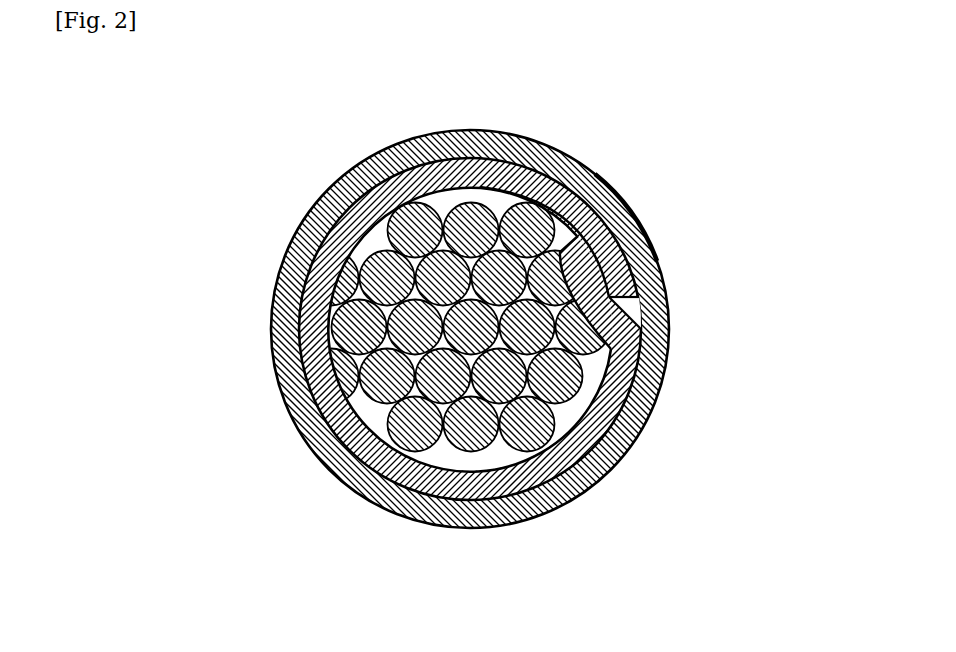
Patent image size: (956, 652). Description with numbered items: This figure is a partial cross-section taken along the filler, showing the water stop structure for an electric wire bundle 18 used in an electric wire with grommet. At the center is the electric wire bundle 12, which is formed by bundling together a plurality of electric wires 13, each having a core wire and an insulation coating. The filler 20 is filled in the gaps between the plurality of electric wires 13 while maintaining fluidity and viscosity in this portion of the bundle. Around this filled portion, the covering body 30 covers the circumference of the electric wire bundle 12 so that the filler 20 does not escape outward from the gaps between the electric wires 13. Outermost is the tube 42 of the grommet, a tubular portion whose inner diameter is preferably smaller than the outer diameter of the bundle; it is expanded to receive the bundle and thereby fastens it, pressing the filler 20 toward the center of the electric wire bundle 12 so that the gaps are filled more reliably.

The electric wire bundle 12 is at (495, 207).
The electric wire 13 is at (523, 202).
The electric wire bundle 18 is at (692, 236).
The filler 20 is at (583, 397).
The covering body 30 is at (643, 362).
The tube 42 is at (670, 298).